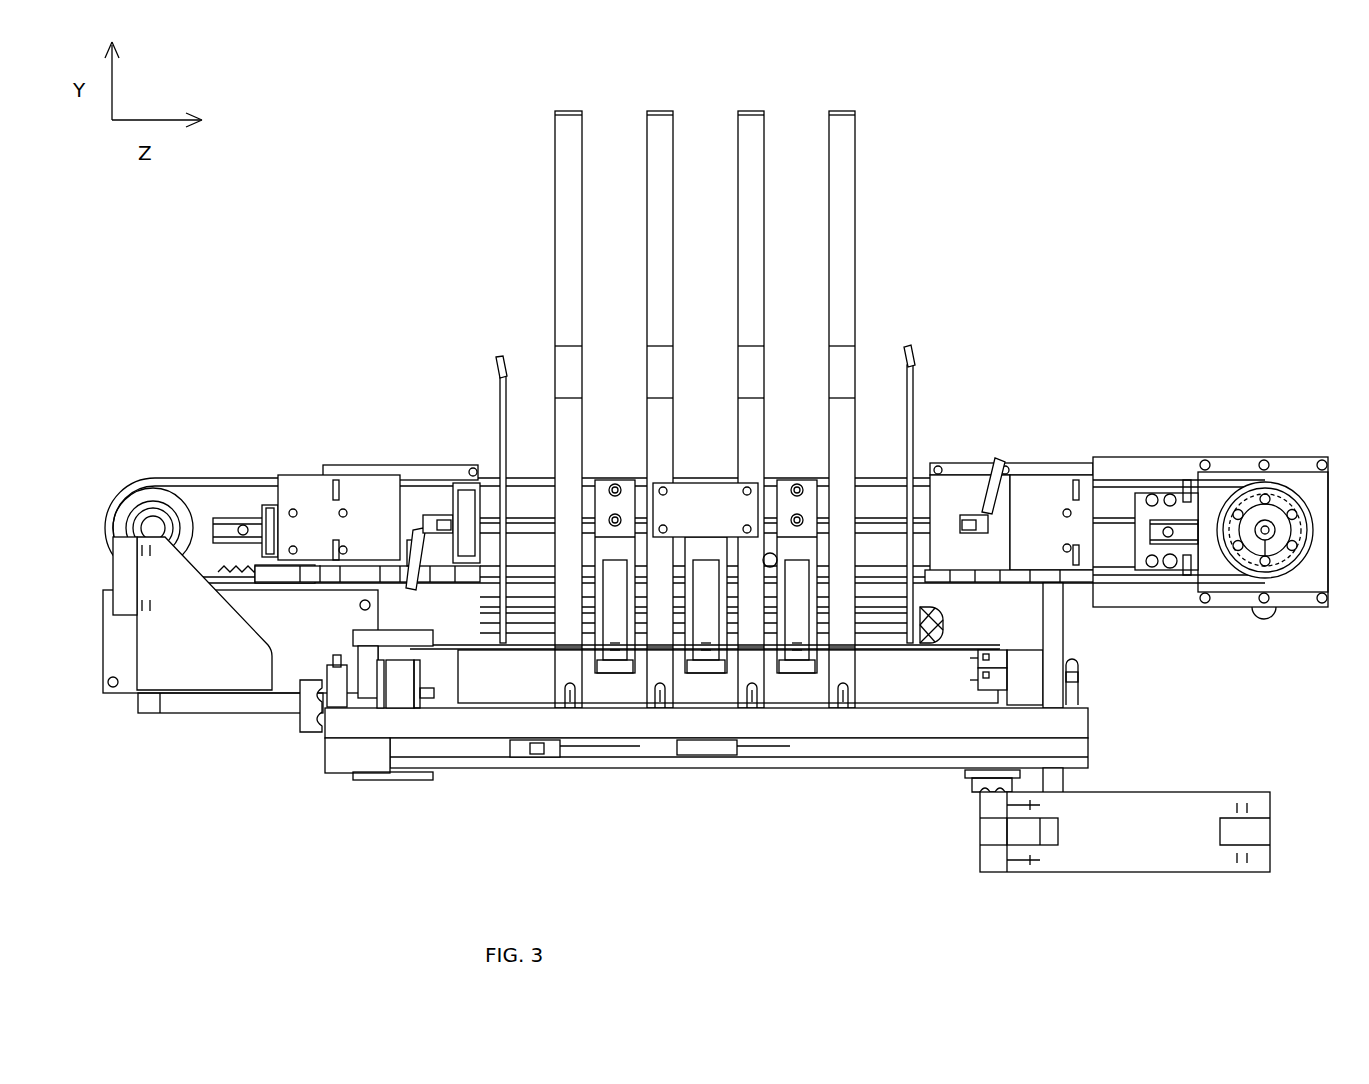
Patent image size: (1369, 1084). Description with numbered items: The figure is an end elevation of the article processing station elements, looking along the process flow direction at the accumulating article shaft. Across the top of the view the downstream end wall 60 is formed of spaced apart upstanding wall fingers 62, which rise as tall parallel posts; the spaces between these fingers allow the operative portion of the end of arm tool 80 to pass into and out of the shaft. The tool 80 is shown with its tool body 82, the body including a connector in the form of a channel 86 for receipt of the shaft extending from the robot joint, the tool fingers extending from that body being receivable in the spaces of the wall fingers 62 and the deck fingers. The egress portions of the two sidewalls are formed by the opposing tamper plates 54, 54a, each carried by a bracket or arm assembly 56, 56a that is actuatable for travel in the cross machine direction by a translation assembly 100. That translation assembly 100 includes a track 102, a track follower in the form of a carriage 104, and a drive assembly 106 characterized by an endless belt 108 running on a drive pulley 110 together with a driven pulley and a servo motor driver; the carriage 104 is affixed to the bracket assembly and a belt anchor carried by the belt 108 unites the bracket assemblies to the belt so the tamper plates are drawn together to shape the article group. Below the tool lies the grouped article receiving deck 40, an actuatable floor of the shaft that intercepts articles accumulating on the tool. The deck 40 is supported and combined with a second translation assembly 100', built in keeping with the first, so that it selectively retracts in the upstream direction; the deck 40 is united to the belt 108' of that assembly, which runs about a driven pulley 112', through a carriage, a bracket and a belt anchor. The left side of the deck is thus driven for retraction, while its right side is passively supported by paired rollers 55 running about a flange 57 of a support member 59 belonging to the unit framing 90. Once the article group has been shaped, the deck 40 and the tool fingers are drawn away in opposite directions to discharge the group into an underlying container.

The translation assembly 100 is at (1210, 335).
The downstream end wall 60 is at (916, 178).
The spaced apart upstanding wall fingers 62 is at (563, 163).
The drive assembly 106 is at (1197, 370).
The carriage 104 is at (280, 510).
The track 102 is at (1188, 530).
The endless belt 108 is at (1263, 489).
The drive pulley 110 is at (1292, 452).
The tamper plate 54 is at (482, 414).
The tamper plate 54a is at (932, 410).
The bracket assembly 56 is at (432, 480).
The bracket assembly 56a is at (963, 483).
The end of arm tool (EOAT) 80 is at (780, 470).
The tool body 82 is at (633, 500).
The channel 86 is at (712, 517).
The translation assembly 100' is at (676, 644).
The grouped article receiving deck 40 is at (965, 645).
The paired rollers 55 is at (1007, 652).
The flange 57 is at (1005, 667).
The support member 59 is at (1012, 698).
The unit framing 90 is at (345, 752).
The driven pulley 112' is at (372, 759).
The belt 108' is at (435, 753).